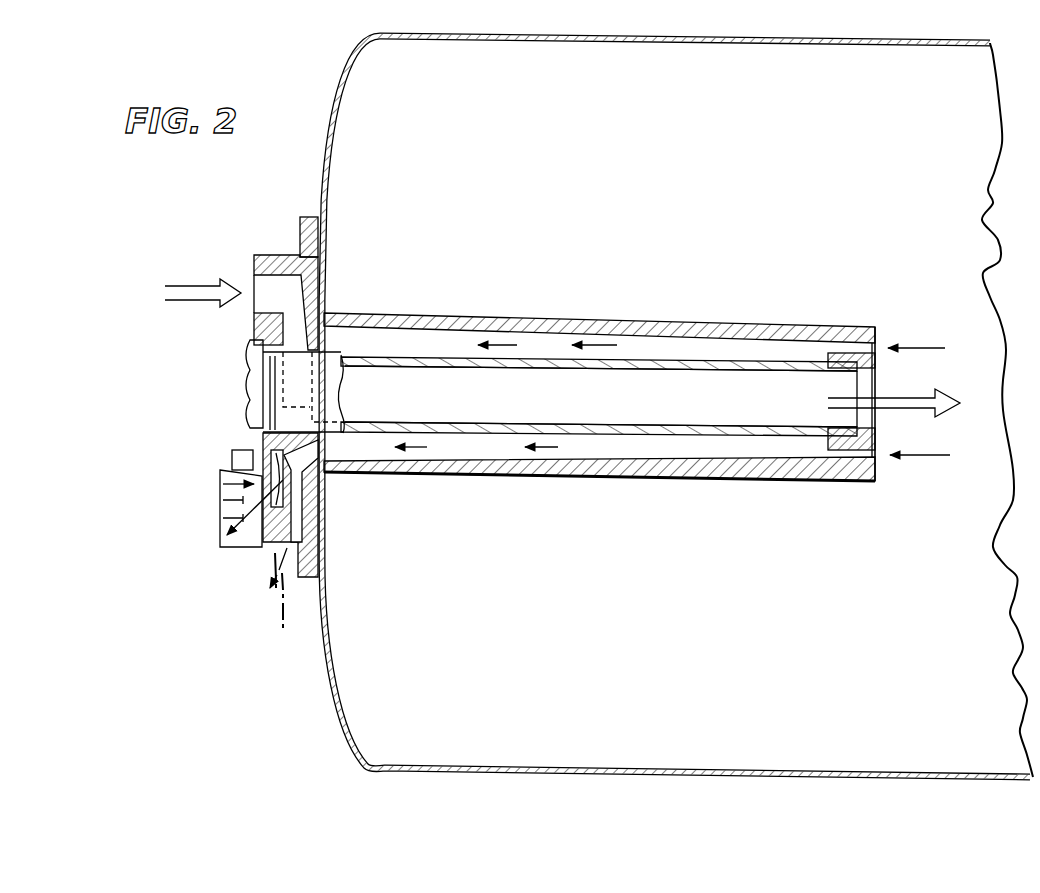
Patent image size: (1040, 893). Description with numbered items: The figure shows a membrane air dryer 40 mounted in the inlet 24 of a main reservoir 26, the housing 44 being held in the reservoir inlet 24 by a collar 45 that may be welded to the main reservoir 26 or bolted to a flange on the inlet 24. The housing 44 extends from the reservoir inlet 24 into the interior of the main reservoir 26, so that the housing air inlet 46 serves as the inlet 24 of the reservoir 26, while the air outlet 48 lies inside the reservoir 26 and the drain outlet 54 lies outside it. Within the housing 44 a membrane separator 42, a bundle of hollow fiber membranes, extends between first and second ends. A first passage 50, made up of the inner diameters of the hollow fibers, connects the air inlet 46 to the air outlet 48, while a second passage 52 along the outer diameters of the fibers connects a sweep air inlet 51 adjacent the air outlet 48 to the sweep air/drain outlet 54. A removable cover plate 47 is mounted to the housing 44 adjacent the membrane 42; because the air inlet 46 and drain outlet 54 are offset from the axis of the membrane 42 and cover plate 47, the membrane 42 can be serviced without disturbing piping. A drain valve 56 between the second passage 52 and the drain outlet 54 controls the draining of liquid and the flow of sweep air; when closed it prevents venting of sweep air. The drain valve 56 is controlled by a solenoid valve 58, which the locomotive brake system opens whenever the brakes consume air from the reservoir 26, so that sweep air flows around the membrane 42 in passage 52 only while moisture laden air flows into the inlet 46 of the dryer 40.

The reservoir inlet 24 is at (338, 310).
The main reservoir 26 is at (342, 726).
The membrane air dryer 40 is at (793, 314).
The membrane separator 42 is at (644, 362).
The housing 44 is at (486, 313).
The collar 45 is at (305, 217).
The air inlet 46 is at (265, 310).
The cover plate 47 is at (243, 388).
The air outlet 48 is at (878, 372).
The first passage 50 is at (523, 404).
The inlet opening 51 is at (880, 347).
The second passage 52 is at (606, 457).
The drain outlet 54 is at (274, 548).
The drain valve 56 is at (220, 470).
The solenoid valve 58 is at (212, 542).